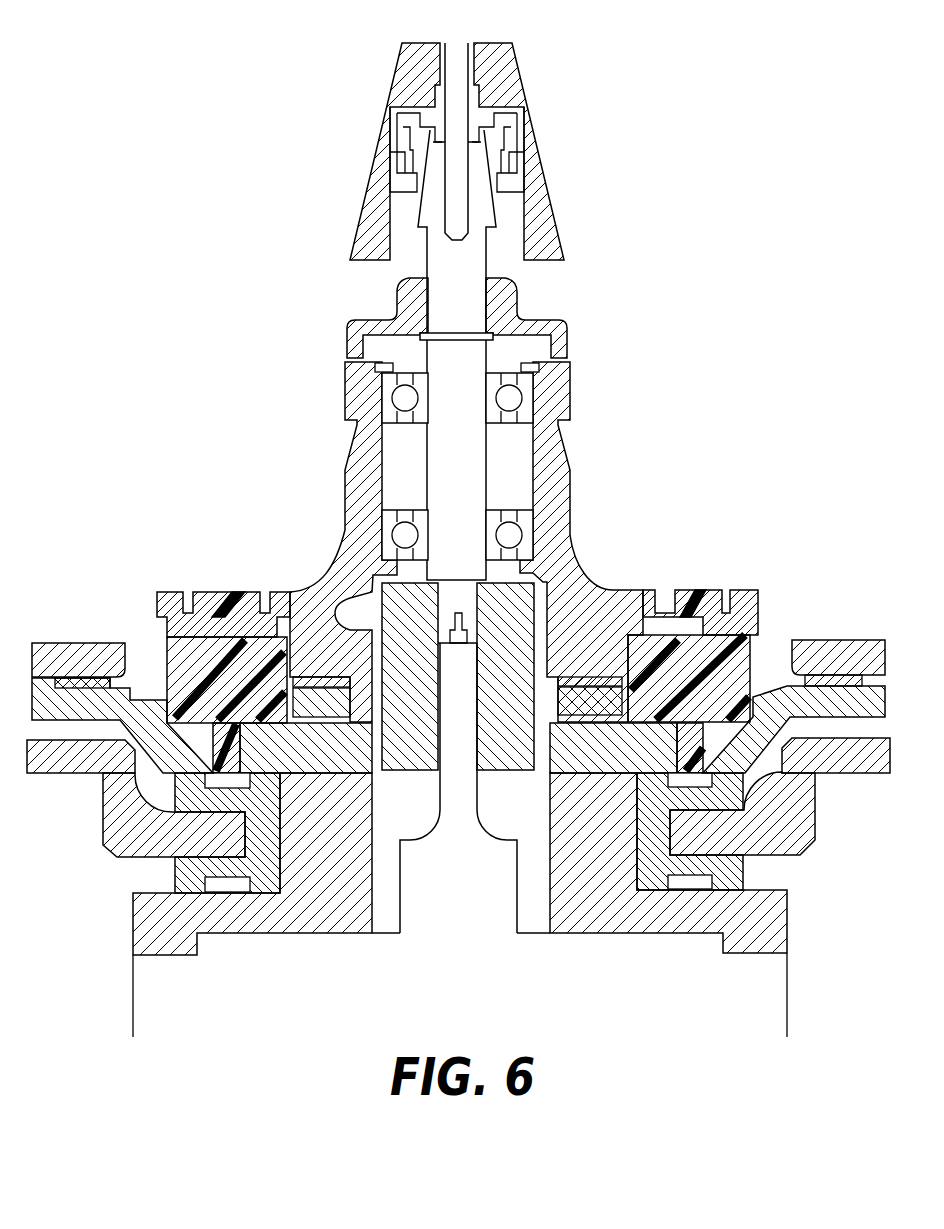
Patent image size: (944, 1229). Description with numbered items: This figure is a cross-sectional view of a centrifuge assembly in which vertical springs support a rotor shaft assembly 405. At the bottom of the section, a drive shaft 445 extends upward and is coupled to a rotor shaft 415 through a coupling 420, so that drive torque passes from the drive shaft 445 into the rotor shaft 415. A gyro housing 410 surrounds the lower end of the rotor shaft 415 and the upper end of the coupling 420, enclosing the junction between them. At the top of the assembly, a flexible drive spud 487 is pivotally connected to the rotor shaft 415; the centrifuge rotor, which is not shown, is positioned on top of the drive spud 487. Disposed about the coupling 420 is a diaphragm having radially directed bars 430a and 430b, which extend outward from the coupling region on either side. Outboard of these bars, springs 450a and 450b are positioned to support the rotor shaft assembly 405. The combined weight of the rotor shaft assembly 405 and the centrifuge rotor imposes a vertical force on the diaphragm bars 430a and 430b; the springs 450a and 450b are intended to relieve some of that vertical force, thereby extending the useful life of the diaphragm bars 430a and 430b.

The rotor shaft assembly 405 is at (340, 392).
The gyro housing 410 is at (358, 445).
The rotor shaft 415 is at (450, 475).
The coupling 420 is at (512, 612).
The diaphragm bar 430a is at (318, 660).
The diaphragm bar 430b is at (583, 680).
The drive shaft 445 is at (460, 766).
The spring 450a is at (167, 657).
The spring 450b is at (752, 652).
The flexible drive spud 487 is at (400, 72).